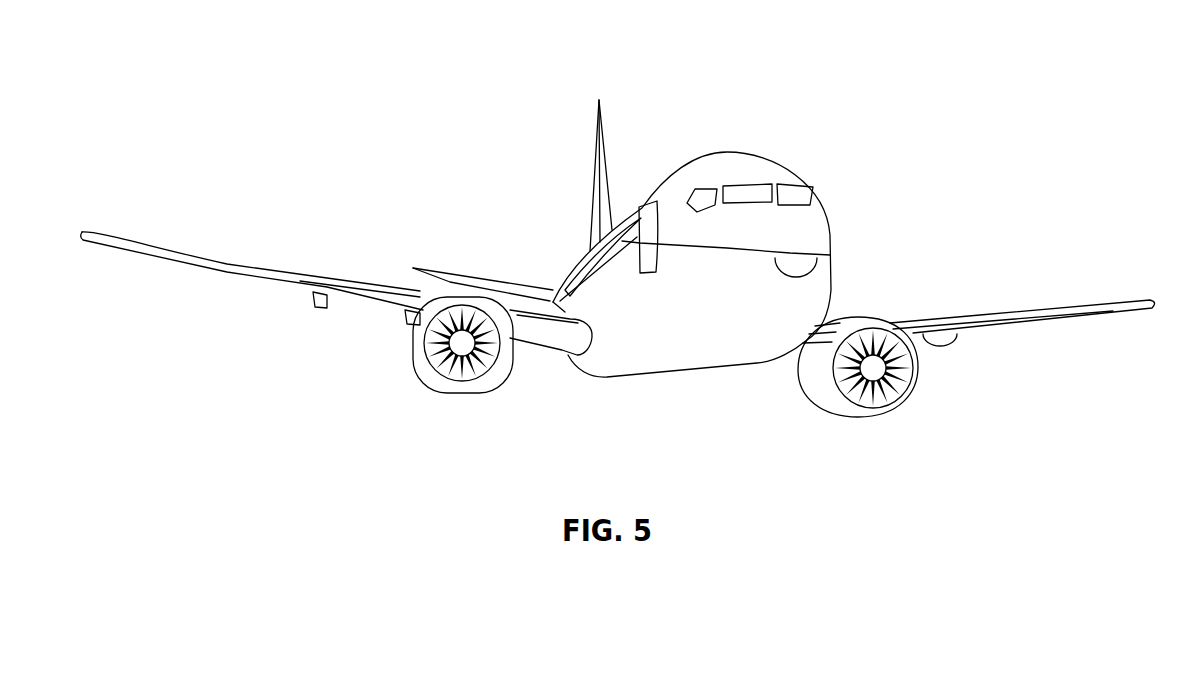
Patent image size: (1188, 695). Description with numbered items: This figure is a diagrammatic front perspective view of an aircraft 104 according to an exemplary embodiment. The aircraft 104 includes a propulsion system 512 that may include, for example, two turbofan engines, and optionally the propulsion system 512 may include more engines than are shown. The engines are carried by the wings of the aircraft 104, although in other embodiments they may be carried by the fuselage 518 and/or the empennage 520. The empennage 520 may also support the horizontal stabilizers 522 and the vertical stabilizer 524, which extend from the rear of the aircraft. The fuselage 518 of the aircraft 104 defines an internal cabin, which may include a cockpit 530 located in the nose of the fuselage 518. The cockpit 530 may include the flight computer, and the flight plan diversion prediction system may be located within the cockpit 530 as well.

The aircraft 104 is at (291, 100).
The propulsion system 512 is at (961, 417).
The fuselage 518 is at (833, 221).
The empennage 520 is at (577, 265).
The horizontal stabilizers 522 is at (473, 270).
The vertical stabilizer 524 is at (590, 193).
The cockpit 530 is at (798, 197).